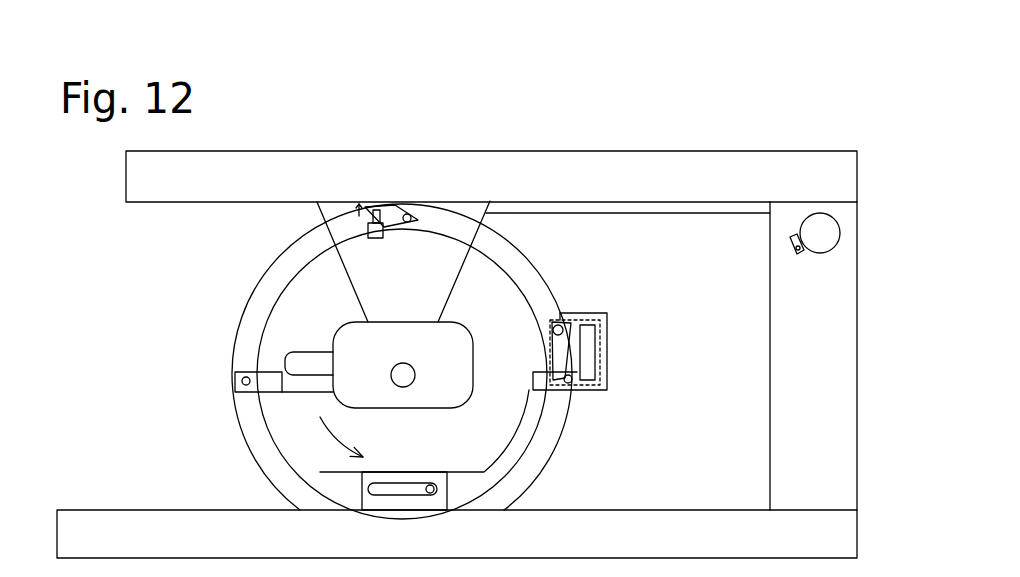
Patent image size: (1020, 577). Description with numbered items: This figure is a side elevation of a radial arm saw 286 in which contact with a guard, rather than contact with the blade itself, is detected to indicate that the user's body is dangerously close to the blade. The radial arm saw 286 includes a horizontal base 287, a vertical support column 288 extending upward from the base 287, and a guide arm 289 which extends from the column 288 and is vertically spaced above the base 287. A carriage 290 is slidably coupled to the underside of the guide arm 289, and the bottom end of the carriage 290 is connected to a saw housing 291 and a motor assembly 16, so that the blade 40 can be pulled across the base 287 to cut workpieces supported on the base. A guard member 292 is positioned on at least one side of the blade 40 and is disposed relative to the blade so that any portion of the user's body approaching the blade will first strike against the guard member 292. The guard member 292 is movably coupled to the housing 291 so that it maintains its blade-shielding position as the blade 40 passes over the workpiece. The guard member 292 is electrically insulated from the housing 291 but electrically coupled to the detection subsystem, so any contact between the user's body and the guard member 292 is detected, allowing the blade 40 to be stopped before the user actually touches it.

The radial arm saw 286 is at (523, 128).
The horizontal base 287 is at (457, 534).
The vertical support column 288 is at (813, 356).
The guide arm 289 is at (491, 176).
The carriage 290 is at (483, 218).
The saw housing 291 is at (240, 322).
The guard member 292 is at (272, 481).
The motor assembly 16 is at (337, 400).
The blade 40 is at (404, 475).